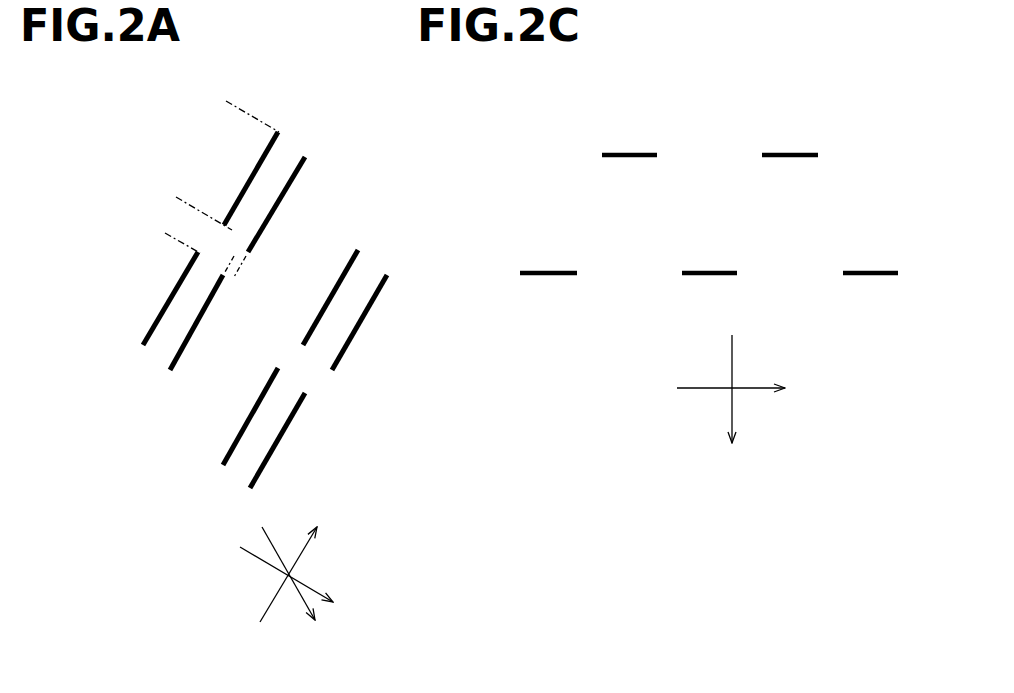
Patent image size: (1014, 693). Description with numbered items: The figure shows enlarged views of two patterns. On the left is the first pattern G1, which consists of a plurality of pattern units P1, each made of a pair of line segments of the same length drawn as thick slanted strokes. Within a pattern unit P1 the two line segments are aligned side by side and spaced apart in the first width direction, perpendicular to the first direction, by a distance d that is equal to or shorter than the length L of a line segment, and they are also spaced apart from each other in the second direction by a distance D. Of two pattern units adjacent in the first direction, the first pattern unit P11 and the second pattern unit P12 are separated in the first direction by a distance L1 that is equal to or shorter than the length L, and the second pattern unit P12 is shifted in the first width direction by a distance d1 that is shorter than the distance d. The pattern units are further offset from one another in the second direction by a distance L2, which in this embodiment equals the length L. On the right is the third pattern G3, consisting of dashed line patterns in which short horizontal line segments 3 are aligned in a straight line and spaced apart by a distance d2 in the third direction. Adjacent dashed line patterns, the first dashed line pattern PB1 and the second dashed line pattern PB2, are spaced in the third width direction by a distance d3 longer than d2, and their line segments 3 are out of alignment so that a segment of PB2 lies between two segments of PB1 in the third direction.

In FIG. 2C, the line segment 3 is at (695, 271).
In FIG. 2A, the first pattern G1 is at (93, 143).
In FIG. 2C, the third pattern G3 is at (826, 104).
In FIG. 2A, the pattern unit P1 is at (343, 373).
In FIG. 2A, the first pattern unit P11 is at (335, 77).
In FIG. 2A, the second pattern unit P12 is at (165, 427).
In FIG. 2C, the first dashed line pattern PB1 is at (627, 150).
In FIG. 2C, the second dashed line pattern PB2 is at (540, 278).
In FIG. 2A, the length of the line segment L is at (237, 108).
In FIG. 2A, the distance between pattern units in the first direction L1 is at (190, 205).
In FIG. 2A, the offset distance in the second direction L2 is at (305, 157).
In FIG. 2A, the distance between line segments in the first width direction d is at (199, 317).
In FIG. 2A, the shift distance in the first width direction d1 is at (205, 243).
In FIG. 2A, the distance between line segments in the second direction D is at (265, 460).
In FIG. 2C, the distance between line segments in the third direction d2 is at (763, 150).
In FIG. 2C, the distance between dashed line patterns in the third width direction d3 is at (602, 155).